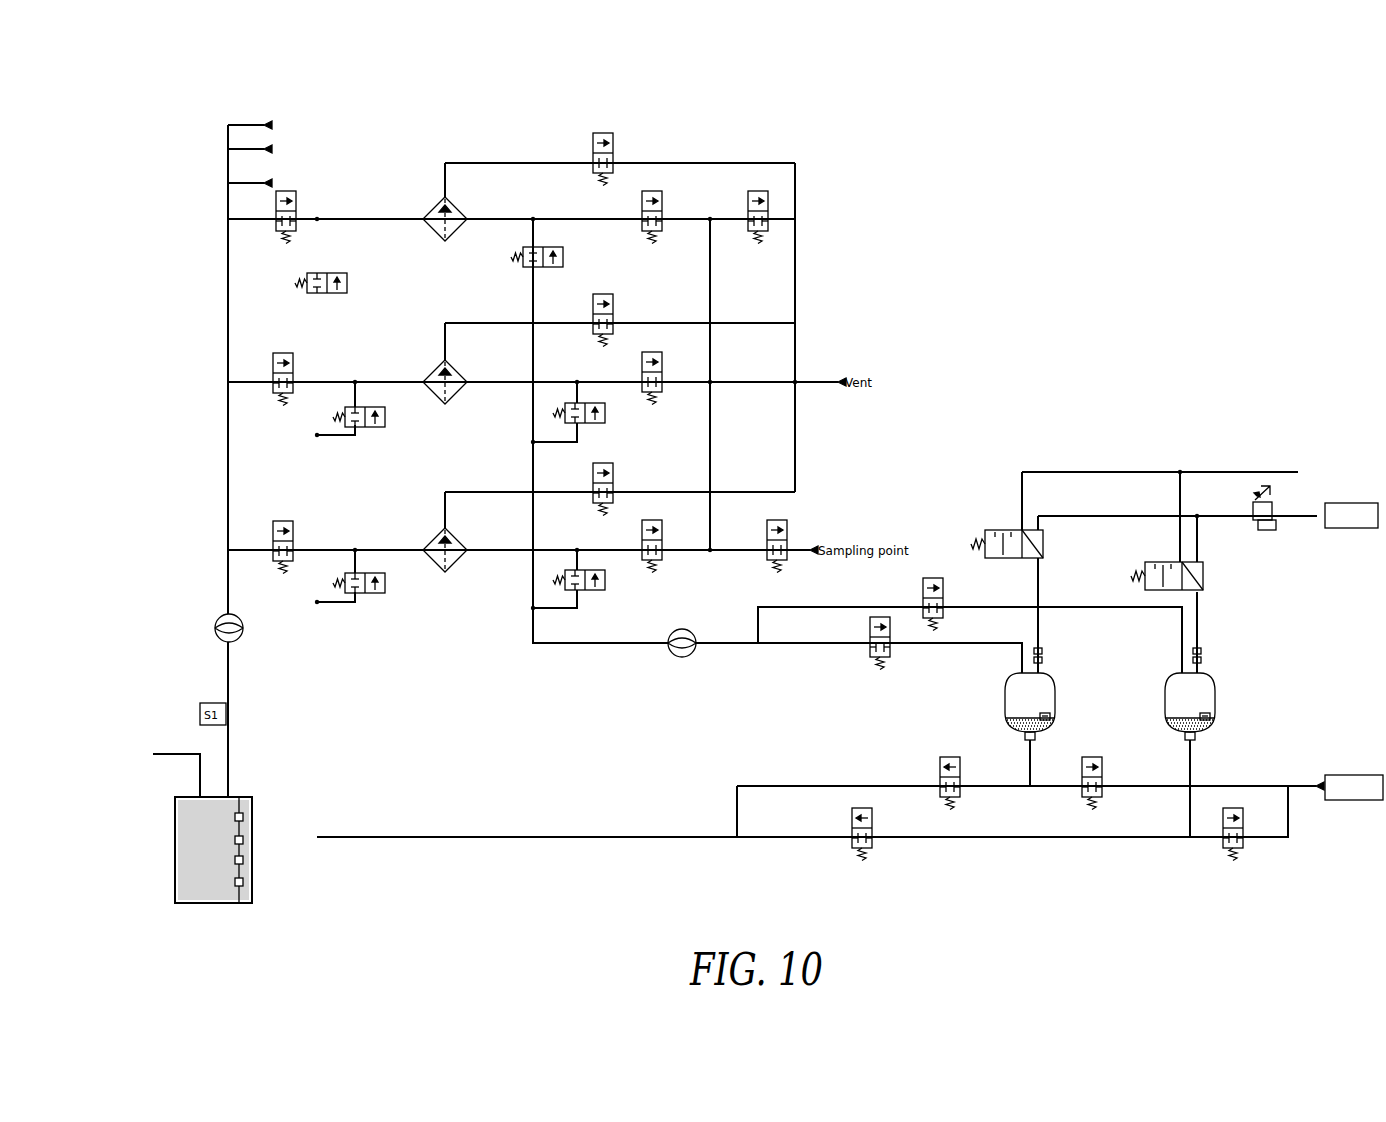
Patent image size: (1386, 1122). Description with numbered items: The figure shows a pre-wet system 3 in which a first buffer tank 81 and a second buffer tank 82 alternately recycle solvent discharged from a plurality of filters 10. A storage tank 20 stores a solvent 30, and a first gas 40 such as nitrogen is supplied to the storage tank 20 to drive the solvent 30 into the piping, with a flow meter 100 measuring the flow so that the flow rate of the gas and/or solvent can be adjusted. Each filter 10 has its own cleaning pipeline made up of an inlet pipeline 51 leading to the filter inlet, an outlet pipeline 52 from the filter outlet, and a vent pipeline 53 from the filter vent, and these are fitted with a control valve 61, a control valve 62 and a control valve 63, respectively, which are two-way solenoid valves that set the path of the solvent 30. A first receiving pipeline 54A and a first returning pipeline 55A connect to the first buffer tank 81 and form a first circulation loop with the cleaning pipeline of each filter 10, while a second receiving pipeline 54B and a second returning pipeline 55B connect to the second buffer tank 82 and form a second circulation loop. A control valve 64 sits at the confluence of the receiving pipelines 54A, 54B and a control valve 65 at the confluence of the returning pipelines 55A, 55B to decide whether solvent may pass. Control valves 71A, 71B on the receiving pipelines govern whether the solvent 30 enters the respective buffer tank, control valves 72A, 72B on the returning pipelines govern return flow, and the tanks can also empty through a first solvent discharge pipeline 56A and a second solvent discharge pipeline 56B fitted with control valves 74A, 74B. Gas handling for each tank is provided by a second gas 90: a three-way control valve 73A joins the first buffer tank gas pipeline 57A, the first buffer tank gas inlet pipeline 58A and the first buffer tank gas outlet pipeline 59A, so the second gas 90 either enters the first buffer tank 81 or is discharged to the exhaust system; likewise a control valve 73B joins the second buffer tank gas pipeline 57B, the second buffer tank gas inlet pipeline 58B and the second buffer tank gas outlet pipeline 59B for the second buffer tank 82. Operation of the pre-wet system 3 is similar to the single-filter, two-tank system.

The pre-wet system 3 is at (1305, 157).
The filter 10 is at (458, 567).
The storage tank 20 is at (221, 850).
The solvent 30 is at (190, 843).
The first gas 40 is at (172, 762).
The inlet pipeline 51 is at (357, 217).
The outlet pipeline 52 is at (512, 219).
The vent pipeline 53 is at (525, 161).
The first receiving pipeline 54A is at (798, 646).
The second receiving pipeline 54B is at (856, 606).
The first returning pipeline 55A is at (981, 784).
The second returning pipeline 55B is at (992, 839).
The first solvent discharge pipeline 56A is at (1163, 788).
The second solvent discharge pipeline 56B is at (1285, 839).
The first buffer tank gas pipeline 57A is at (1040, 623).
The second buffer tank gas pipeline 57B is at (1198, 623).
The first buffer tank gas inlet pipeline 58A is at (1081, 518).
The second buffer tank gas inlet pipeline 58B is at (1200, 544).
The first buffer tank gas outlet pipeline 59A is at (1106, 470).
The second buffer tank gas outlet pipeline 59B is at (1178, 490).
The control valve 61 is at (279, 520).
The control valve 62 is at (642, 525).
The control valve 63 is at (613, 468).
The control valve 64 is at (605, 580).
The control valve 65 is at (366, 594).
The control valve 71A is at (882, 659).
The control valve 71B is at (932, 575).
The control valve 72A is at (939, 764).
The control valve 72B is at (855, 850).
The control valve 73A is at (993, 529).
The control valve 73B is at (1204, 580).
The control valve 74A is at (1103, 763).
The control valve 74B is at (1221, 848).
The first buffer tank 81 is at (1056, 698).
The second buffer tank 82 is at (1215, 698).
The second gas 90 is at (1355, 502).
The flow meter 100 is at (684, 659).